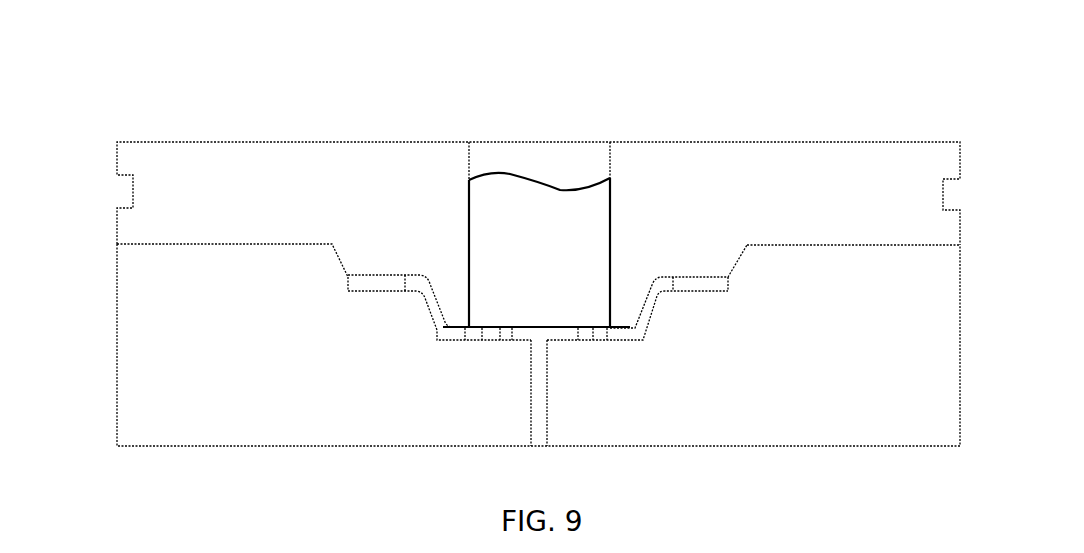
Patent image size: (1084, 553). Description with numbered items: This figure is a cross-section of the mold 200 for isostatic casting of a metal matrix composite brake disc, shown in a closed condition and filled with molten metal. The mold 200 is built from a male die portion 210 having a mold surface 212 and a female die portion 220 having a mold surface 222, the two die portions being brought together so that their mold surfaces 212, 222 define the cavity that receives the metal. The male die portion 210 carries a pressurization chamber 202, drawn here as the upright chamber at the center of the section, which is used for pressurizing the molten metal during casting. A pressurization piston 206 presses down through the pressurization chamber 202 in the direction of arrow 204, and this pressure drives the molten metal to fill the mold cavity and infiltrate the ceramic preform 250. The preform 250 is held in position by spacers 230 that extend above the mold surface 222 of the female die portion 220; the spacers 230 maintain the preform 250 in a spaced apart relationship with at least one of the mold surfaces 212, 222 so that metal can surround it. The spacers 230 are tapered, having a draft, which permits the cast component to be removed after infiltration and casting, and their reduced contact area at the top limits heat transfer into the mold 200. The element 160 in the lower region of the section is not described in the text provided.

The mold 200 is at (828, 63).
The male die portion 210 is at (150, 190).
The female die portion 220 is at (140, 298).
The pressurization chamber 202 is at (468, 222).
The arrow 204 is at (590, 280).
The pressurization piston 206 is at (537, 292).
The mold surface 212 is at (440, 310).
The mold surface 222 is at (428, 308).
The ceramic preform 250 is at (705, 284).
The spacers 230 is at (672, 302).
The base strip and stem 160 is at (622, 340).